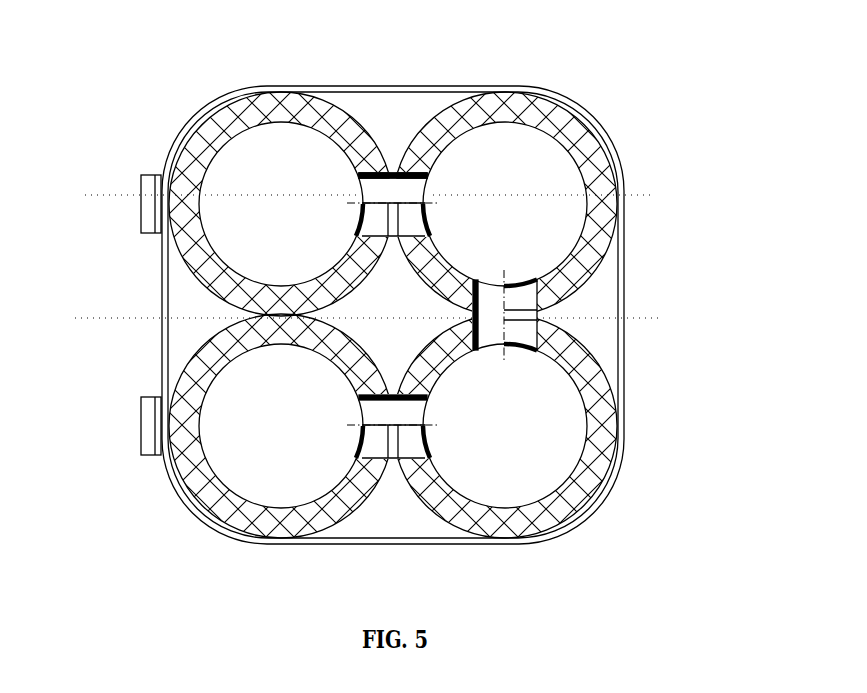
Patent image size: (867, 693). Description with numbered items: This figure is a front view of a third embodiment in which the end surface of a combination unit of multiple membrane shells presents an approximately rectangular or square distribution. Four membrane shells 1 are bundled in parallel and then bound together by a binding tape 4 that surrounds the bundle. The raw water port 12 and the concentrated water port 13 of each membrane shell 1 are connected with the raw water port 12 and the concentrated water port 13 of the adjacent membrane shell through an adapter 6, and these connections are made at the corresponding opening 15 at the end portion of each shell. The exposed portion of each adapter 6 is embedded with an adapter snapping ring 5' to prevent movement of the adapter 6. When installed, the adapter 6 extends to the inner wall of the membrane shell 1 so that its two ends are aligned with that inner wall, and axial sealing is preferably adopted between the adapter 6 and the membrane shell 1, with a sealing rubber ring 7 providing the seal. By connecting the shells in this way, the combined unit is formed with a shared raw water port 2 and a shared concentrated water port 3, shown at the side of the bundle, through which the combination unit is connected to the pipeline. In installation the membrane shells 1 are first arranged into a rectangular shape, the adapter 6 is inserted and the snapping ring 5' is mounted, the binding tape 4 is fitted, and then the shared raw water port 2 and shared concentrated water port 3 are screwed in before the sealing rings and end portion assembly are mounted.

The membrane shell 1 is at (196, 152).
The shared raw water port 2 is at (97, 505).
The shared concentrated water port 3 is at (97, 300).
The binding tape 4 is at (362, 541).
The adapter snapping ring 5' is at (404, 330).
The adapter 6 is at (522, 305).
The sealing rubber ring 7 is at (358, 176).
The raw water port 12 is at (410, 171).
The concentrated water port 13 is at (375, 171).
The opening 15 is at (375, 171).